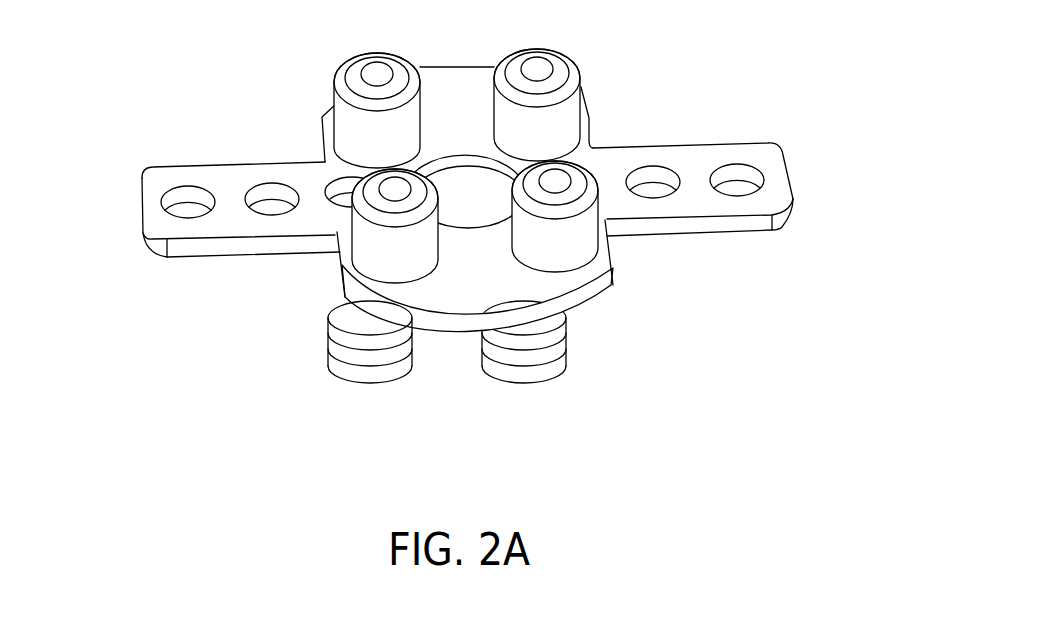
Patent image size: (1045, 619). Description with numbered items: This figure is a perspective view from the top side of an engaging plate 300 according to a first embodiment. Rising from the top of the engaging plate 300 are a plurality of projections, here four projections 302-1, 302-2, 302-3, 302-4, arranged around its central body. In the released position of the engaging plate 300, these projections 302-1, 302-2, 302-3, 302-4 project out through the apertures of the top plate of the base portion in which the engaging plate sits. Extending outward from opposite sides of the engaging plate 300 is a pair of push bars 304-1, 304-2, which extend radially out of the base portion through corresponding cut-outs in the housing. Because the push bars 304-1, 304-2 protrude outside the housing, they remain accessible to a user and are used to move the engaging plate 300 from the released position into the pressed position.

The engaging plate 300 is at (489, 203).
The projection 302-1 is at (578, 258).
The projection 302-2 is at (570, 85).
The projection 302-3 is at (345, 88).
The projection 302-4 is at (377, 253).
The push bar 304-1 is at (773, 173).
The push bar 304-2 is at (140, 212).